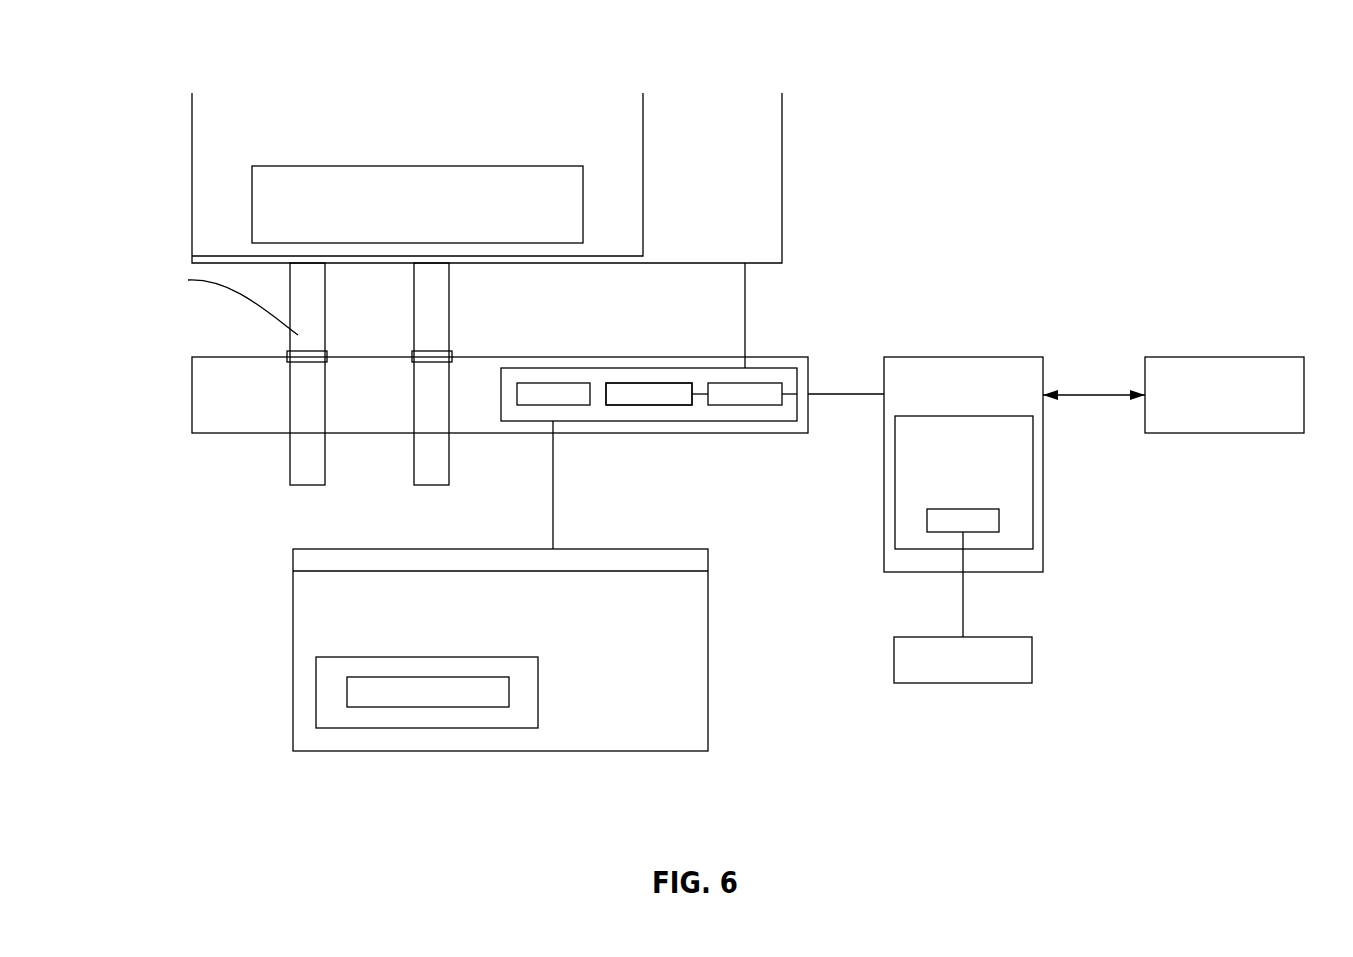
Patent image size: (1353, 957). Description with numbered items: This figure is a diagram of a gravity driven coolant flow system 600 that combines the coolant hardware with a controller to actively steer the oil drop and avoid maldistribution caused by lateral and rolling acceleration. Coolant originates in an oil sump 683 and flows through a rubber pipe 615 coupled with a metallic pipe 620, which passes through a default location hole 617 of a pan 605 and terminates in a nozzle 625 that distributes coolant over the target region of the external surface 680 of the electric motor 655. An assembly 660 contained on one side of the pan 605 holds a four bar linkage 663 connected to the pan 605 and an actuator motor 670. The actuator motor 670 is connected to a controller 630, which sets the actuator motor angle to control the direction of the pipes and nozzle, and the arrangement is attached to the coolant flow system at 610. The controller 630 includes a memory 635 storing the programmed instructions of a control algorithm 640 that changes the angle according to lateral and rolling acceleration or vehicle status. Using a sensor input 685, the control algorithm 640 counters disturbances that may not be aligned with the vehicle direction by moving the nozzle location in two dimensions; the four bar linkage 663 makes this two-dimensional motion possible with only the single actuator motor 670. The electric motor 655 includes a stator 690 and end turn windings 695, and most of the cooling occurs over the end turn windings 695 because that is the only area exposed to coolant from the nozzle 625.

The gravity driven coolant flow system 600 is at (714, 98).
The pan 605 is at (792, 367).
The attachment point 610 is at (747, 303).
The rubber pipe 615 is at (708, 336).
The default location hole 617 is at (287, 358).
The metallic pipe 620 is at (307, 403).
The nozzle 625 is at (289, 478).
The controller 630 is at (992, 357).
The memory 635 is at (1033, 510).
The control algorithm 640 is at (1017, 637).
The electric motor 655 is at (641, 686).
The assembly 660 is at (643, 406).
The four bar linkage 663 is at (578, 390).
The actuator motor 670 is at (745, 394).
The external surface 680 is at (294, 560).
The oil sump 683 is at (425, 186).
The sensor input 685 is at (1262, 357).
The stator 690 is at (507, 729).
The end turn windings 695 is at (407, 708).